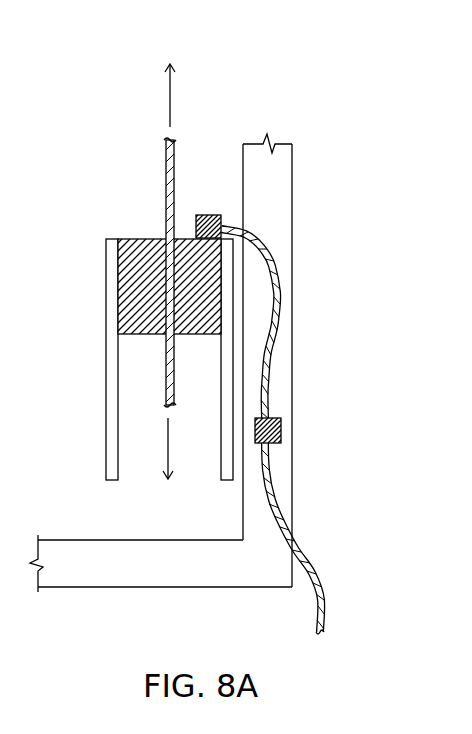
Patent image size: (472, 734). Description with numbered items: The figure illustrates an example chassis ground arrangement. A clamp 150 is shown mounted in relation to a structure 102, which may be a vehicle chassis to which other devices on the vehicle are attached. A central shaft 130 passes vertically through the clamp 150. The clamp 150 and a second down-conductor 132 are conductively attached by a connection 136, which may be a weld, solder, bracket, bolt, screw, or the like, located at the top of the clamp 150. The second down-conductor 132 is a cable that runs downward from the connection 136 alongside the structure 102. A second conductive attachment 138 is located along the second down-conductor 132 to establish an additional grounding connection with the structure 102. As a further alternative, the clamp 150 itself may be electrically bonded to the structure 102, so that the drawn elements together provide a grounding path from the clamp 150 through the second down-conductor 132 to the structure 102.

The structure 102 is at (117, 572).
The rod / actuator shaft 130 is at (164, 175).
The second down-conductor 132 is at (306, 563).
The connection 136 is at (210, 214).
The second conductive attachment 138 is at (273, 415).
The clamp 150 is at (105, 257).